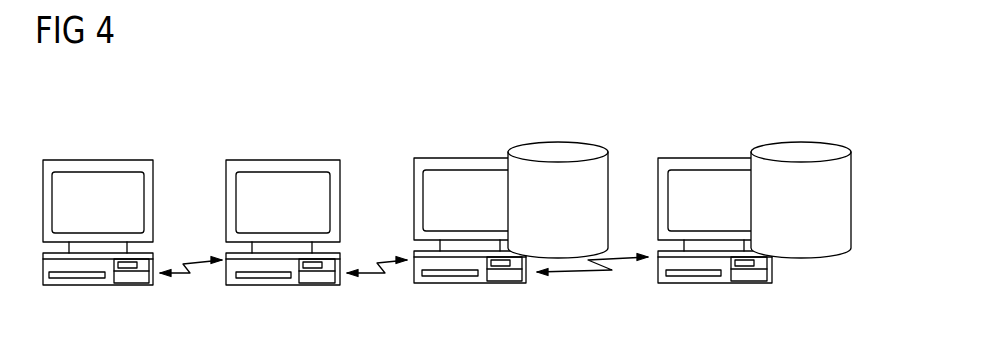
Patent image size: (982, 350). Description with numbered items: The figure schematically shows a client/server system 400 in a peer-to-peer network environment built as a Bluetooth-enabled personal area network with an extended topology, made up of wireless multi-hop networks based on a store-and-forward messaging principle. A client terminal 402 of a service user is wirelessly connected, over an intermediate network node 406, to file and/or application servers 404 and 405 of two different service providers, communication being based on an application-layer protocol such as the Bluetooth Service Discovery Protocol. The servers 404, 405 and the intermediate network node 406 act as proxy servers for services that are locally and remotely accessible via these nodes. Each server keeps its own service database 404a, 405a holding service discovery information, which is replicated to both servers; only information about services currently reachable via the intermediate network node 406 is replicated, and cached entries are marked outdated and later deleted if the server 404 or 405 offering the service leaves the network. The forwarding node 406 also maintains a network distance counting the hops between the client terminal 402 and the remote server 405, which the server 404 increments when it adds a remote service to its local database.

The client/server system 400 is at (110, 96).
The client terminal 402 is at (53, 160).
The file and/or application server 404 is at (460, 158).
The service database 404a is at (557, 142).
The file and/or application server 405 is at (702, 157).
The service database 405a is at (800, 141).
The intermediate network node 406 is at (272, 160).